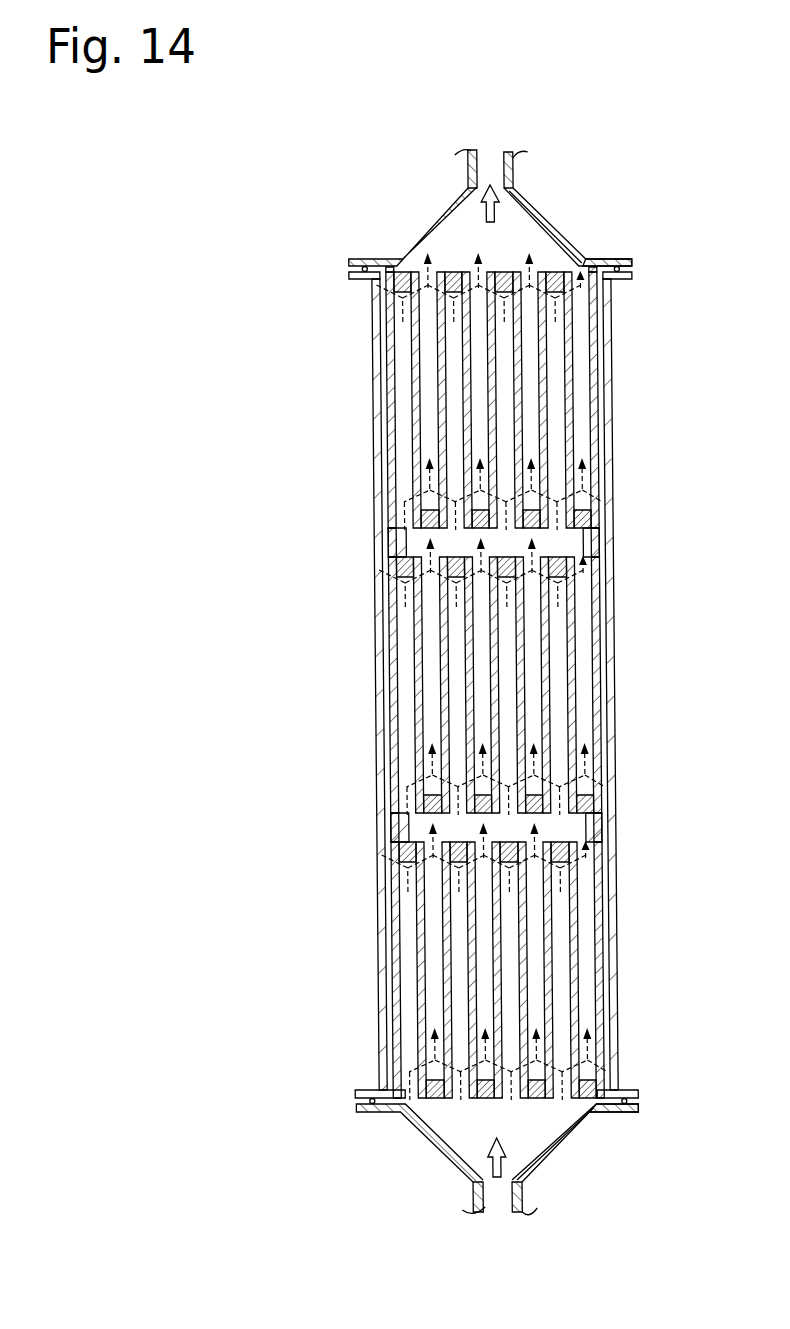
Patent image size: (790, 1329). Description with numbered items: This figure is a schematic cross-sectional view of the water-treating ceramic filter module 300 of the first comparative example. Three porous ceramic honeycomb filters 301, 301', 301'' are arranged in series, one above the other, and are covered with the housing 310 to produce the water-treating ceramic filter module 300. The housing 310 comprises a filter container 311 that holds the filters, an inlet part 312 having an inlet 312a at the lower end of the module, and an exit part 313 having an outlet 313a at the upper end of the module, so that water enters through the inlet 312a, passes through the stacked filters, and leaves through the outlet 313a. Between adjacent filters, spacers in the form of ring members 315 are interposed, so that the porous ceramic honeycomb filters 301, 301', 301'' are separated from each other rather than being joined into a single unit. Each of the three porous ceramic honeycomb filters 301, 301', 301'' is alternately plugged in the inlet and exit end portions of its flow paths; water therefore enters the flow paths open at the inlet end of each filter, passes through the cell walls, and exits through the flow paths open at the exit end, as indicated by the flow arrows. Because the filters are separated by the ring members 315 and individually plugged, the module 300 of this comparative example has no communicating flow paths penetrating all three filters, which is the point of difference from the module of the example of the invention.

The water-treating ceramic filter module 300 is at (298, 164).
The housing 310 is at (262, 463).
The filter container 311 is at (382, 622).
The inlet part 312 is at (435, 1148).
The inlet 312a is at (497, 1193).
The exit part 313 is at (412, 237).
The outlet 313a is at (492, 162).
The porous ceramic honeycomb filter 301 is at (542, 961).
The porous ceramic honeycomb filter 301' is at (543, 676).
The porous ceramic honeycomb filter 301'' is at (541, 391).
The ring member 315 is at (598, 550).